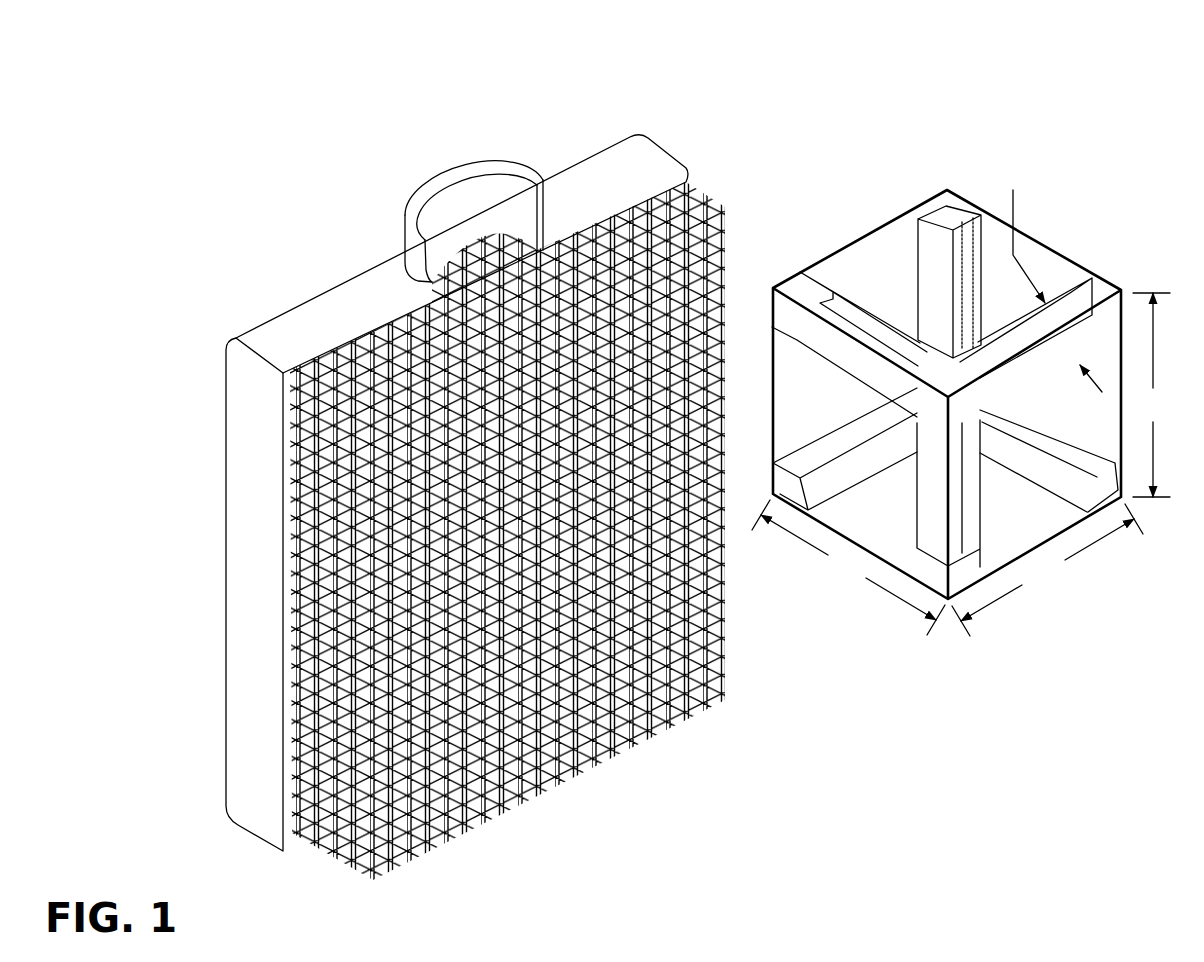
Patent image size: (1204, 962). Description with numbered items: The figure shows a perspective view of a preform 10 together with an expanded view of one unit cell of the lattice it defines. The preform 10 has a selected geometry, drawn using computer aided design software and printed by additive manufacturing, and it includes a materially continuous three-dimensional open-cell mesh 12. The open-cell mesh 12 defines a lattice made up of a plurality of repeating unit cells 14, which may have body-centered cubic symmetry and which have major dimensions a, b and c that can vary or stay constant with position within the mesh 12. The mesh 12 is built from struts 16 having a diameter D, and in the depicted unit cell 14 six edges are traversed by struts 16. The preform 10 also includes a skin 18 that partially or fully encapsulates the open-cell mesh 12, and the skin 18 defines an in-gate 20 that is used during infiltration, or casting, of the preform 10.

The preform 10 is at (680, 100).
The three-dimensional open-cell mesh 12 is at (718, 200).
The unit cell 14 is at (1110, 203).
The strut 16 is at (950, 187).
The skin 18 is at (245, 578).
The in-gate 20 is at (405, 240).